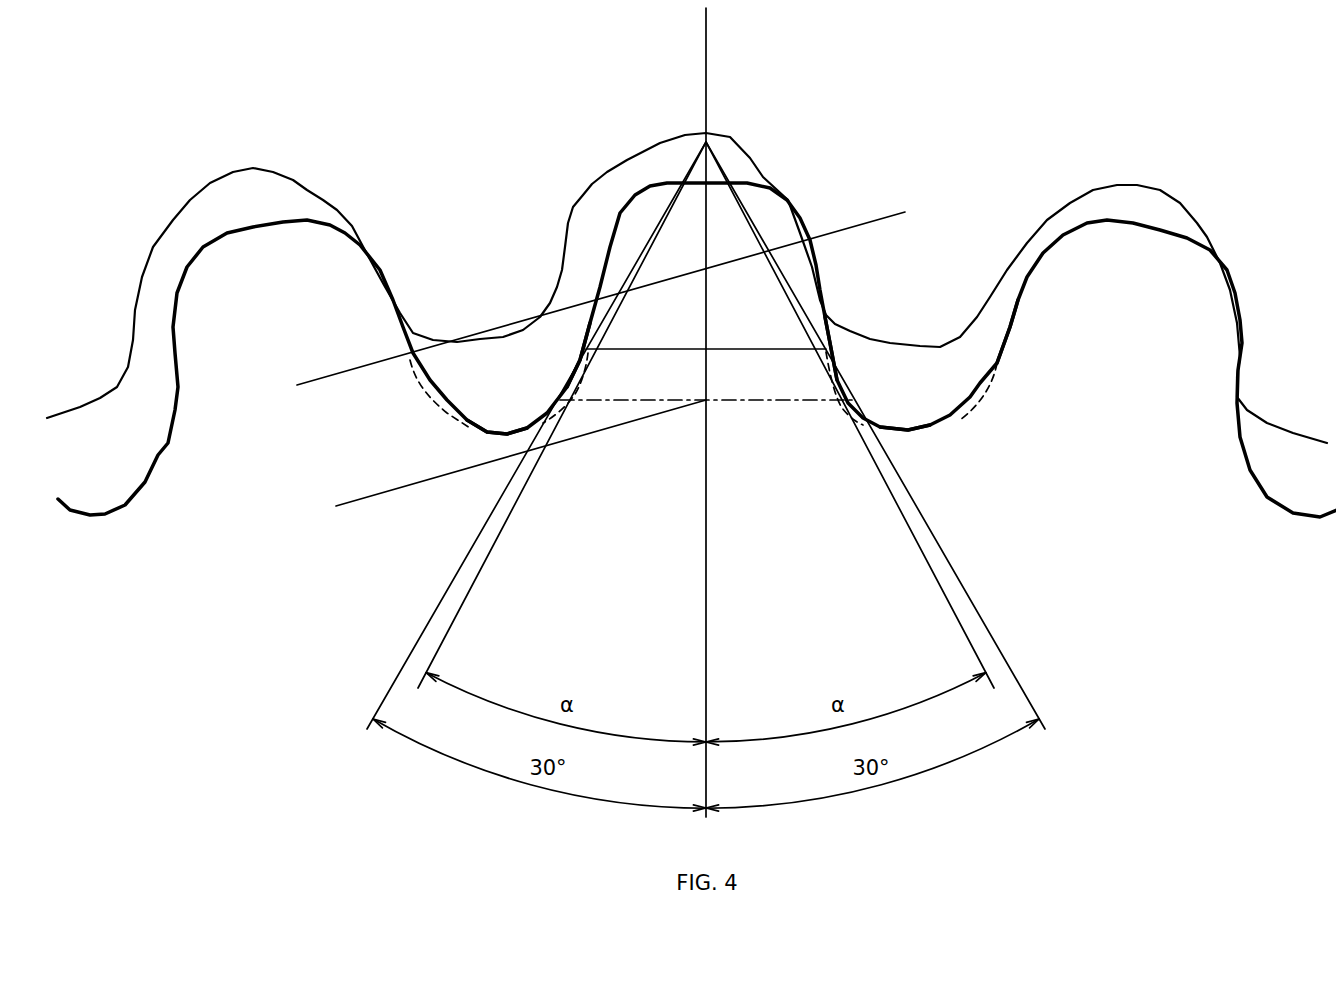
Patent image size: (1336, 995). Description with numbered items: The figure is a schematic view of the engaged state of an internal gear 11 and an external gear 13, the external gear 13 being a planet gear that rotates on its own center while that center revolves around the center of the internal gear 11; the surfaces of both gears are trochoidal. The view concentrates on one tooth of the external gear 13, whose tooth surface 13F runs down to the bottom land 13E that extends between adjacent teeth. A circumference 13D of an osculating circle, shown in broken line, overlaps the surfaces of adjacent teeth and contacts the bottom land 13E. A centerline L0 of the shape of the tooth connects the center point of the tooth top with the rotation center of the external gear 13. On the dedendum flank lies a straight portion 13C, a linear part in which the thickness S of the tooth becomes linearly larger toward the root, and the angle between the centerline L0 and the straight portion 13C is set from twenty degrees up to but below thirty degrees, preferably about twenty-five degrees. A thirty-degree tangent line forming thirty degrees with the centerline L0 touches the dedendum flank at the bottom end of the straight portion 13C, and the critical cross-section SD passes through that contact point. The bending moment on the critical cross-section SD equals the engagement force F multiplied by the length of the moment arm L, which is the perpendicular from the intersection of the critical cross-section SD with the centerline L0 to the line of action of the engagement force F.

The internal gear 11 is at (533, 109).
The external gear 13 is at (1101, 517).
The straight portion 13C is at (411, 327).
The circumference of an osculating circle 13D is at (430, 407).
The bottom land 13E is at (510, 433).
The tooth surface 13F is at (583, 318).
The centerline of the shape of the tooth L0 is at (707, 57).
The engagement force F is at (844, 218).
The length of the moment arm L is at (308, 383).
The thickness of the straight portion S is at (599, 352).
The critical cross-section SD is at (573, 403).